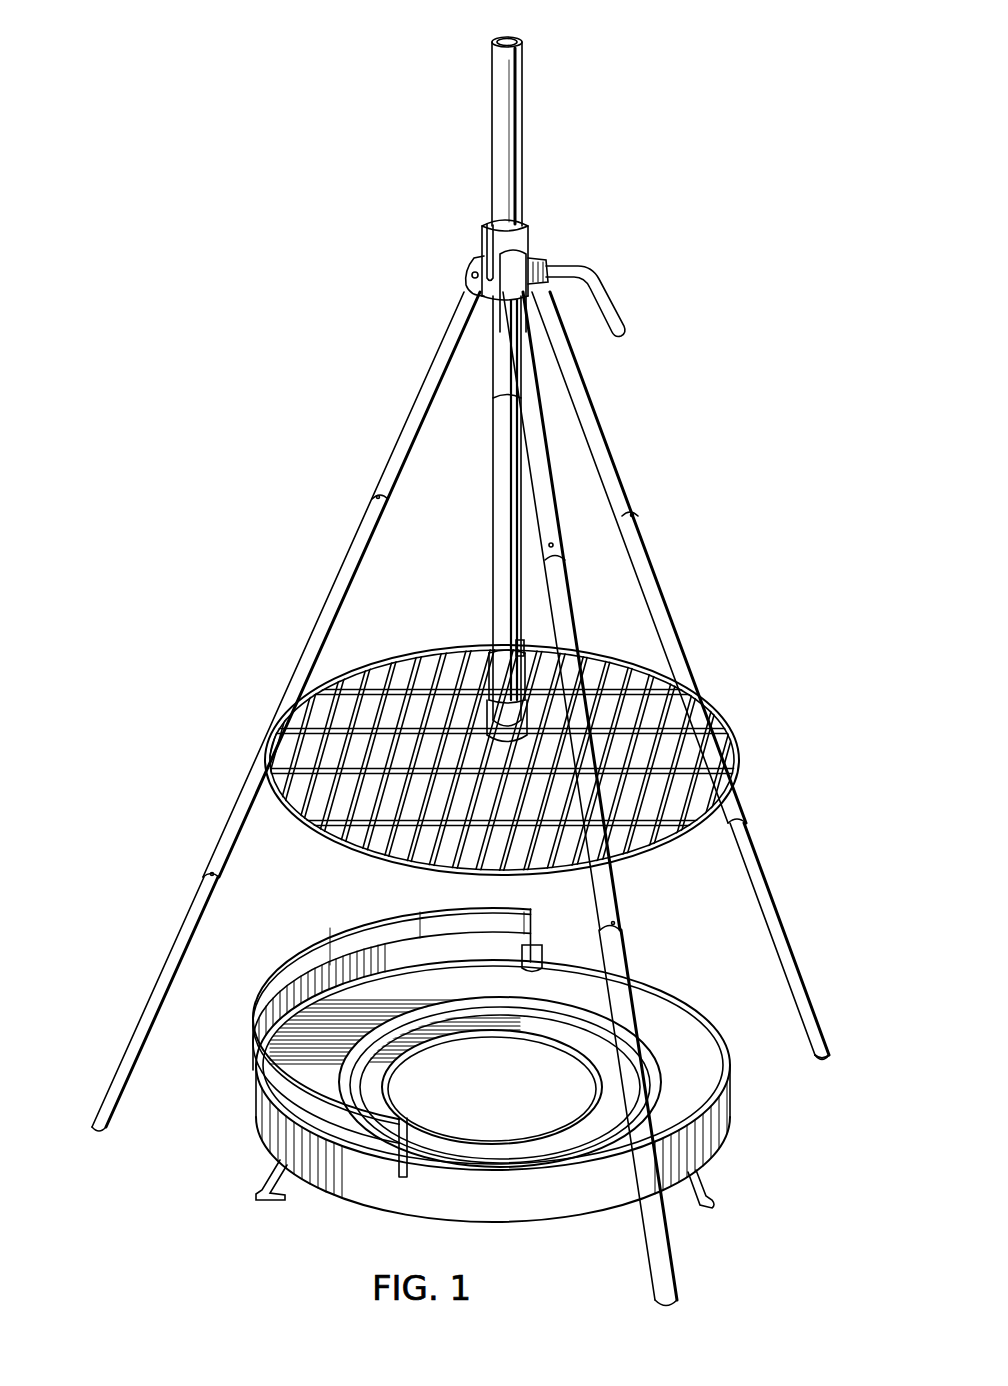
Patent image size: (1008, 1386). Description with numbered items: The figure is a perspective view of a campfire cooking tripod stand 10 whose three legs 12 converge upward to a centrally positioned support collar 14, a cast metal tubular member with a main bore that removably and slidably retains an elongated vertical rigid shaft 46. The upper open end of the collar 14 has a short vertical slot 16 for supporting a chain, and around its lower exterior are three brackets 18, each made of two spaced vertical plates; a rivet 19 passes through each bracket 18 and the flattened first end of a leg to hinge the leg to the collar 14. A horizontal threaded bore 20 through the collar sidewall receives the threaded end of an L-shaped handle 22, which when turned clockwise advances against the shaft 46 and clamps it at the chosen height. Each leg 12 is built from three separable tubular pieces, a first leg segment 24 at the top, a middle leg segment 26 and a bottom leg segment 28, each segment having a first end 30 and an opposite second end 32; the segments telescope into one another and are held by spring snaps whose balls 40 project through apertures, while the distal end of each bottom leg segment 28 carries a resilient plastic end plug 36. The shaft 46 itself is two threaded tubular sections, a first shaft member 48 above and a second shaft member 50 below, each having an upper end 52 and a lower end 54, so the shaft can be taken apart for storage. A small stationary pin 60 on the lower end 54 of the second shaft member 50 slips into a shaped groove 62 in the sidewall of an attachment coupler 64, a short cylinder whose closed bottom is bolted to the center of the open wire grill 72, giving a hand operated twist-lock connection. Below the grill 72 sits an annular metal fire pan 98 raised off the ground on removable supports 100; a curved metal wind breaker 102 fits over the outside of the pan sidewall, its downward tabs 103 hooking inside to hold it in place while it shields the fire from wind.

The tripod stand 10 is at (428, 380).
The legs 12 is at (660, 602).
The support collar 14 is at (512, 248).
The vertical slot 16 is at (487, 222).
The brackets 18 is at (468, 274).
The rivet 19 is at (470, 275).
The threaded bore 20 is at (542, 266).
The L-shaped handle 22 is at (606, 302).
The first leg segment 24 is at (545, 425).
The middle leg segment 26 is at (316, 630).
The bottom leg segment 28 is at (165, 963).
The first end 30 is at (470, 288).
The second end 32 is at (378, 495).
The end plug 36 is at (833, 1063).
The ball 40 is at (372, 497).
The rigid shaft 46 is at (523, 130).
The first shaft member 48 is at (488, 66).
The second shaft member 50 is at (496, 540).
The upper end 52 is at (520, 50).
The lower end 54 is at (497, 398).
The pin 60 is at (521, 672).
The groove 62 is at (520, 643).
The attachment coupler 64 is at (497, 690).
The open wire grill 72 is at (636, 752).
The fire pan 98 is at (735, 1108).
The supports 100 is at (712, 1200).
The wind breaker 102 is at (336, 947).
The tabs 103 is at (537, 957).